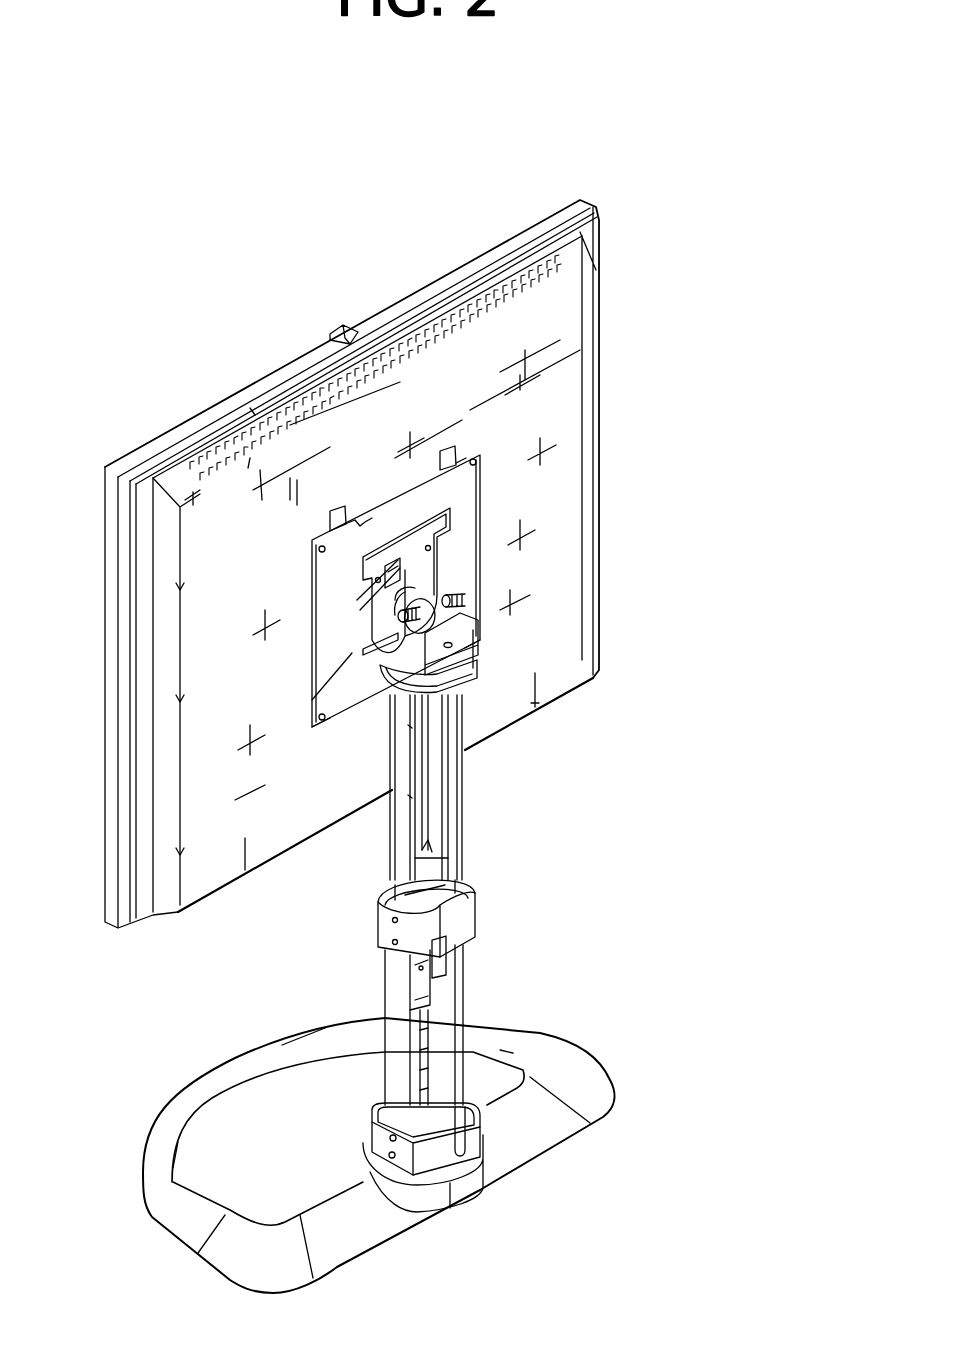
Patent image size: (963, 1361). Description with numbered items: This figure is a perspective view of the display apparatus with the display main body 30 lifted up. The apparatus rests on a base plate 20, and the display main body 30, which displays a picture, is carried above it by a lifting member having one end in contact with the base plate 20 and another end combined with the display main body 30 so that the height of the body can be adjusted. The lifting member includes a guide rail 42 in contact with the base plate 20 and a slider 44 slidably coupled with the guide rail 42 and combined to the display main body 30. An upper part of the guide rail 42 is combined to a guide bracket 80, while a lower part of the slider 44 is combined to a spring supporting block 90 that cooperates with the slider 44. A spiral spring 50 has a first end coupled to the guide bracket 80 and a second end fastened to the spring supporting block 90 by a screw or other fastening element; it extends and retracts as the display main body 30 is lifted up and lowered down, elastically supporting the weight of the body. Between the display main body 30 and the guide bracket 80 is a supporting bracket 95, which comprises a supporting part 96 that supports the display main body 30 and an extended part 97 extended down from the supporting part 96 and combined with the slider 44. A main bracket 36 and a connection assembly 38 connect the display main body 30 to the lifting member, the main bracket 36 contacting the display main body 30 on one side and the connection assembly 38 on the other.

The base plate 20 is at (605, 1073).
The display main body 30 is at (600, 388).
The main bracket 36 is at (312, 607).
The connection assembly 38 is at (383, 660).
The guide rail 42 is at (467, 1003).
The slider 44 is at (463, 783).
The spiral spring 50 is at (445, 967).
The guide bracket 80 is at (477, 913).
The spring supporting block 90 is at (443, 957).
The supporting bracket 95 is at (543, 627).
The supporting part 96 is at (477, 663).
The extended part 97 is at (455, 720).